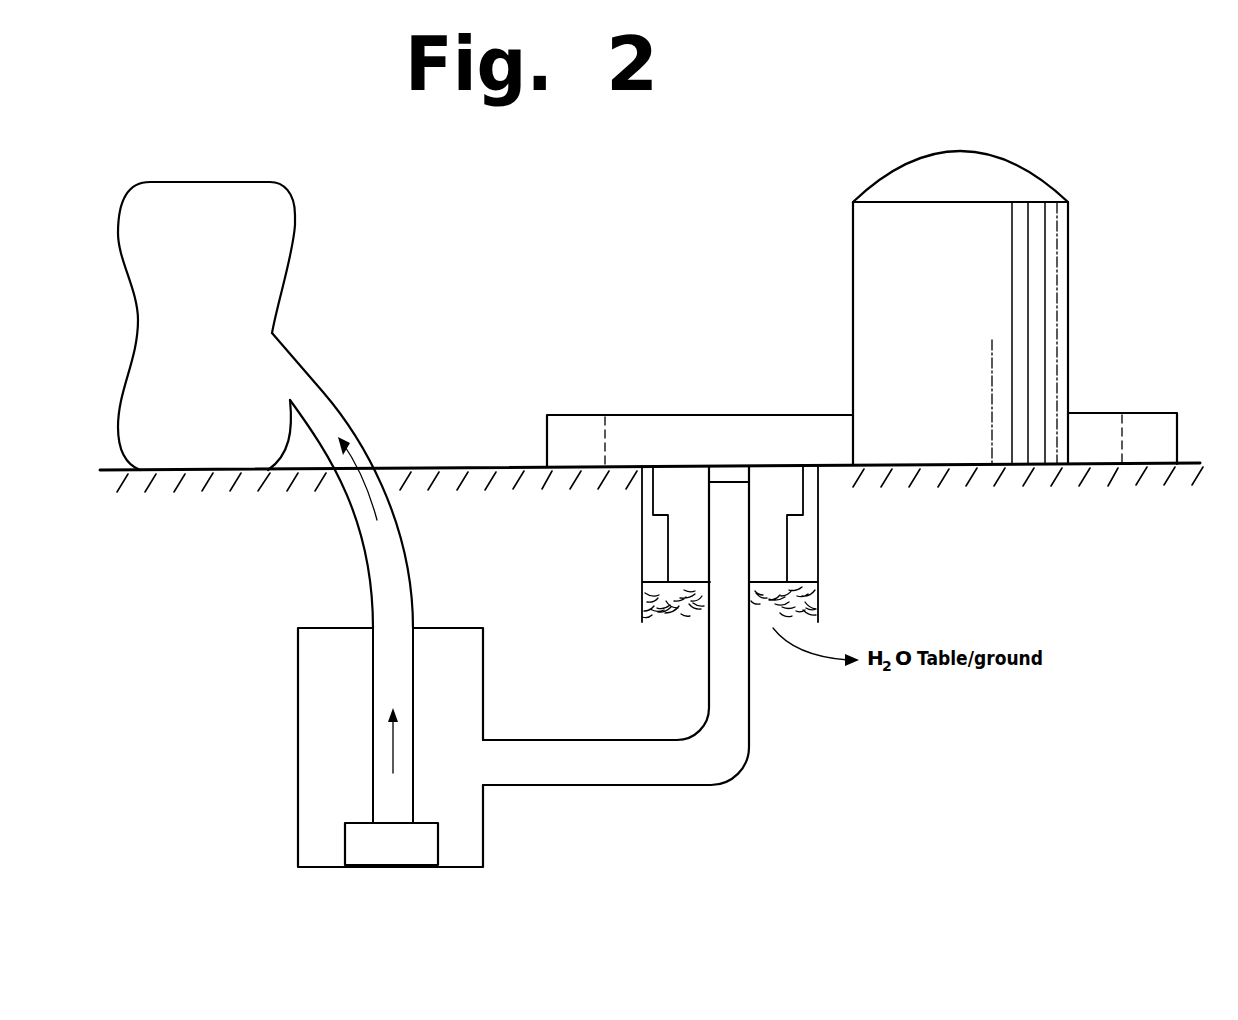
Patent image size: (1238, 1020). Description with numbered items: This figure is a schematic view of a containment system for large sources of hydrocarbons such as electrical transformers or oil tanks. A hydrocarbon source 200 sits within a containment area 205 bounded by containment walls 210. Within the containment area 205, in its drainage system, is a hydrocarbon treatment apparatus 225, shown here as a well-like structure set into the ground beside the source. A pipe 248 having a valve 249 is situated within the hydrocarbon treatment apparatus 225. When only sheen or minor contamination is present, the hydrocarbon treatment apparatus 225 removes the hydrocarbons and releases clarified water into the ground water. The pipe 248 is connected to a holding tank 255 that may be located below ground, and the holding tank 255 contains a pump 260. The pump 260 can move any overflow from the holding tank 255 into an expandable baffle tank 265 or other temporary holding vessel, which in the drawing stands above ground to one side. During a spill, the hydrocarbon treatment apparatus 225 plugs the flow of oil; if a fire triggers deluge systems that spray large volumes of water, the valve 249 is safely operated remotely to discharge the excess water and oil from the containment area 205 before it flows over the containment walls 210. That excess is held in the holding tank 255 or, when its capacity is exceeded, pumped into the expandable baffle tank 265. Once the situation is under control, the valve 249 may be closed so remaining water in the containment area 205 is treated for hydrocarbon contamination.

The hydrocarbon source 200 is at (948, 316).
The containment area 205 is at (670, 403).
The containment walls 210 is at (560, 438).
The hydrocarbon treatment apparatus 225 is at (787, 487).
The pipe 248 is at (710, 507).
The valve 249 is at (731, 464).
The holding tank 255 is at (318, 700).
The pump 260 is at (410, 852).
The expandable baffle tank 265 is at (233, 318).